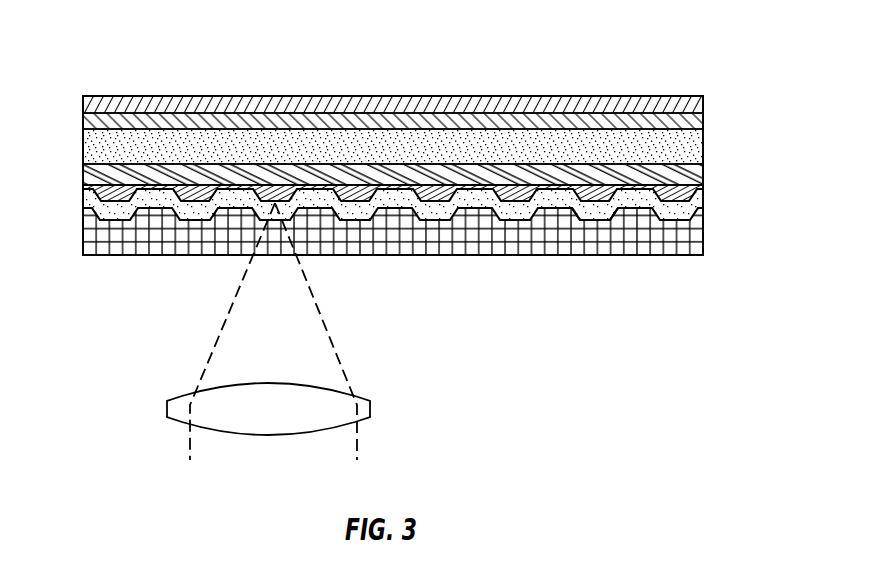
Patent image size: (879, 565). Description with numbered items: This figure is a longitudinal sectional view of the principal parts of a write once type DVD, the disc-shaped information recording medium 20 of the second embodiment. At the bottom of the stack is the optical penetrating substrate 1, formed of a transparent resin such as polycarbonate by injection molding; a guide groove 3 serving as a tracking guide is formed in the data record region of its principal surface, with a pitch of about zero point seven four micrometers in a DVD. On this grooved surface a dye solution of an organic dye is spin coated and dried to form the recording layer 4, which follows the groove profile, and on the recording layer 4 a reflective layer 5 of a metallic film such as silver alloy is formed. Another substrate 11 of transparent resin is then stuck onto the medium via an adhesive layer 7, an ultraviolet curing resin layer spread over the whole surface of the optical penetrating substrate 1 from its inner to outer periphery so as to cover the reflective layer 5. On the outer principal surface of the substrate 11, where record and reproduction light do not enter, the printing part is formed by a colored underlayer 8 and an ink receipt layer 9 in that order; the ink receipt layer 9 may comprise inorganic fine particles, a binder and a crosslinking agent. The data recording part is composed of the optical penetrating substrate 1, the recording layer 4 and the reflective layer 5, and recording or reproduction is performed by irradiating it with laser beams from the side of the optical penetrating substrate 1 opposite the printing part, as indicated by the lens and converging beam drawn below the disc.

The disc-shaped information recording medium 20 is at (114, 58).
The ink receipt layer 9 is at (704, 104).
The colored underlayer 8 is at (86, 118).
The substrate 11 is at (90, 150).
The adhesive layer 7 is at (699, 176).
The reflective layer 5 is at (699, 188).
The recording layer 4 is at (88, 200).
The optical penetrating substrate 1 is at (88, 233).
The guide groove 3 is at (592, 222).